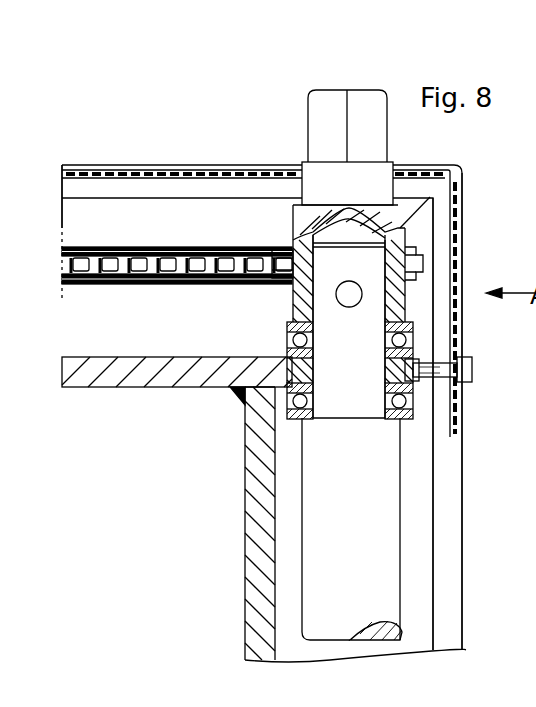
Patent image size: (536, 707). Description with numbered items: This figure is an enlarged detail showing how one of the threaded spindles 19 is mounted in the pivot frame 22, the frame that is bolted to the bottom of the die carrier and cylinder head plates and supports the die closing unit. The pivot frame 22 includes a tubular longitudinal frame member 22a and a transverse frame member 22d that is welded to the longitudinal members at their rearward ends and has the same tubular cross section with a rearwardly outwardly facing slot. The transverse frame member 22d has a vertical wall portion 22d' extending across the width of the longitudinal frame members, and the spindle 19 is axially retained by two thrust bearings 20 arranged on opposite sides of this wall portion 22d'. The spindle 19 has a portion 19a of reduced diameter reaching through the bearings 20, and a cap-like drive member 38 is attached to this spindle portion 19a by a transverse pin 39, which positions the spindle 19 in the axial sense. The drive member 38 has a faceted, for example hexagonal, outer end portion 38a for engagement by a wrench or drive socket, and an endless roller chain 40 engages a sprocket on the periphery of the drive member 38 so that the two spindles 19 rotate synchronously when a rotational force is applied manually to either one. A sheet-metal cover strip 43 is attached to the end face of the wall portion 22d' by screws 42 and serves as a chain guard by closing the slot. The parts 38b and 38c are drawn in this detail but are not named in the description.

The spindle 19 is at (330, 498).
The spindle portion of reduced diameter 19a is at (347, 383).
The thrust bearings 20 is at (415, 330).
The pivot frame 22 is at (240, 166).
The longitudinal frame member 22a is at (452, 537).
The transverse frame member 22d is at (299, 374).
The vertical wall portion 22d' is at (177, 403).
The drive member 38 is at (348, 90).
The faceted outer end portion 38a is at (320, 115).
The bearing housing 38b is at (385, 220).
The nut 38c is at (410, 263).
The transverse pin 39 is at (340, 292).
The endless roller chain 40 is at (167, 283).
The screws 42 is at (472, 372).
The cover strip 43 is at (177, 178).